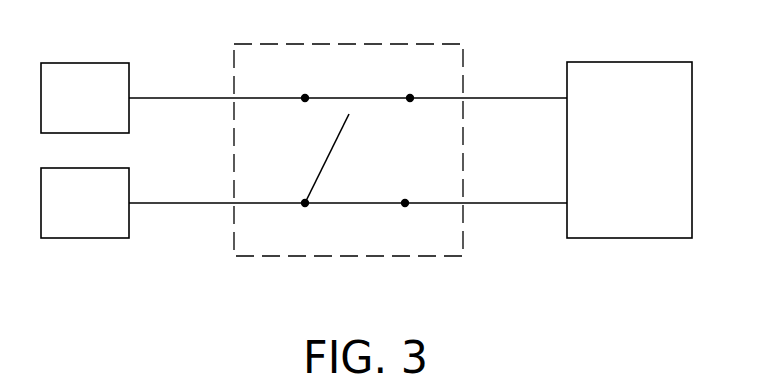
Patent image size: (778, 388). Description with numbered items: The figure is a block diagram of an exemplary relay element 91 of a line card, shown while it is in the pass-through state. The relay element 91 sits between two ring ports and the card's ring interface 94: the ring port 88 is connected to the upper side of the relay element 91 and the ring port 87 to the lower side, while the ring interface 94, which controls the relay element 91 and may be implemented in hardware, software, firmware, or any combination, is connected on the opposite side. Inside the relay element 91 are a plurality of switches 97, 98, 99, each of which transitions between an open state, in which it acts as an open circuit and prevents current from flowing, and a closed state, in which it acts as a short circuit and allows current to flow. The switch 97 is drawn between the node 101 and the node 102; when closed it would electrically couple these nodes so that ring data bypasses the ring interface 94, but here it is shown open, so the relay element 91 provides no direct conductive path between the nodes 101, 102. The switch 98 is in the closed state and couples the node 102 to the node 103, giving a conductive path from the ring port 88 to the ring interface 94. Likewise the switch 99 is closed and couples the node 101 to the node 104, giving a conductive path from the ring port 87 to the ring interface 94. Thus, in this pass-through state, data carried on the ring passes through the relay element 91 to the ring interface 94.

The ring port 87 is at (85, 238).
The ring port 88 is at (85, 63).
The relay element 91 is at (398, 44).
The ring interface 94 is at (630, 62).
The switch 97 is at (303, 156).
The switch 98 is at (372, 112).
The switch 99 is at (380, 215).
The node 101 is at (305, 203).
The node 102 is at (305, 97).
The node 103 is at (410, 97).
The node 104 is at (405, 203).